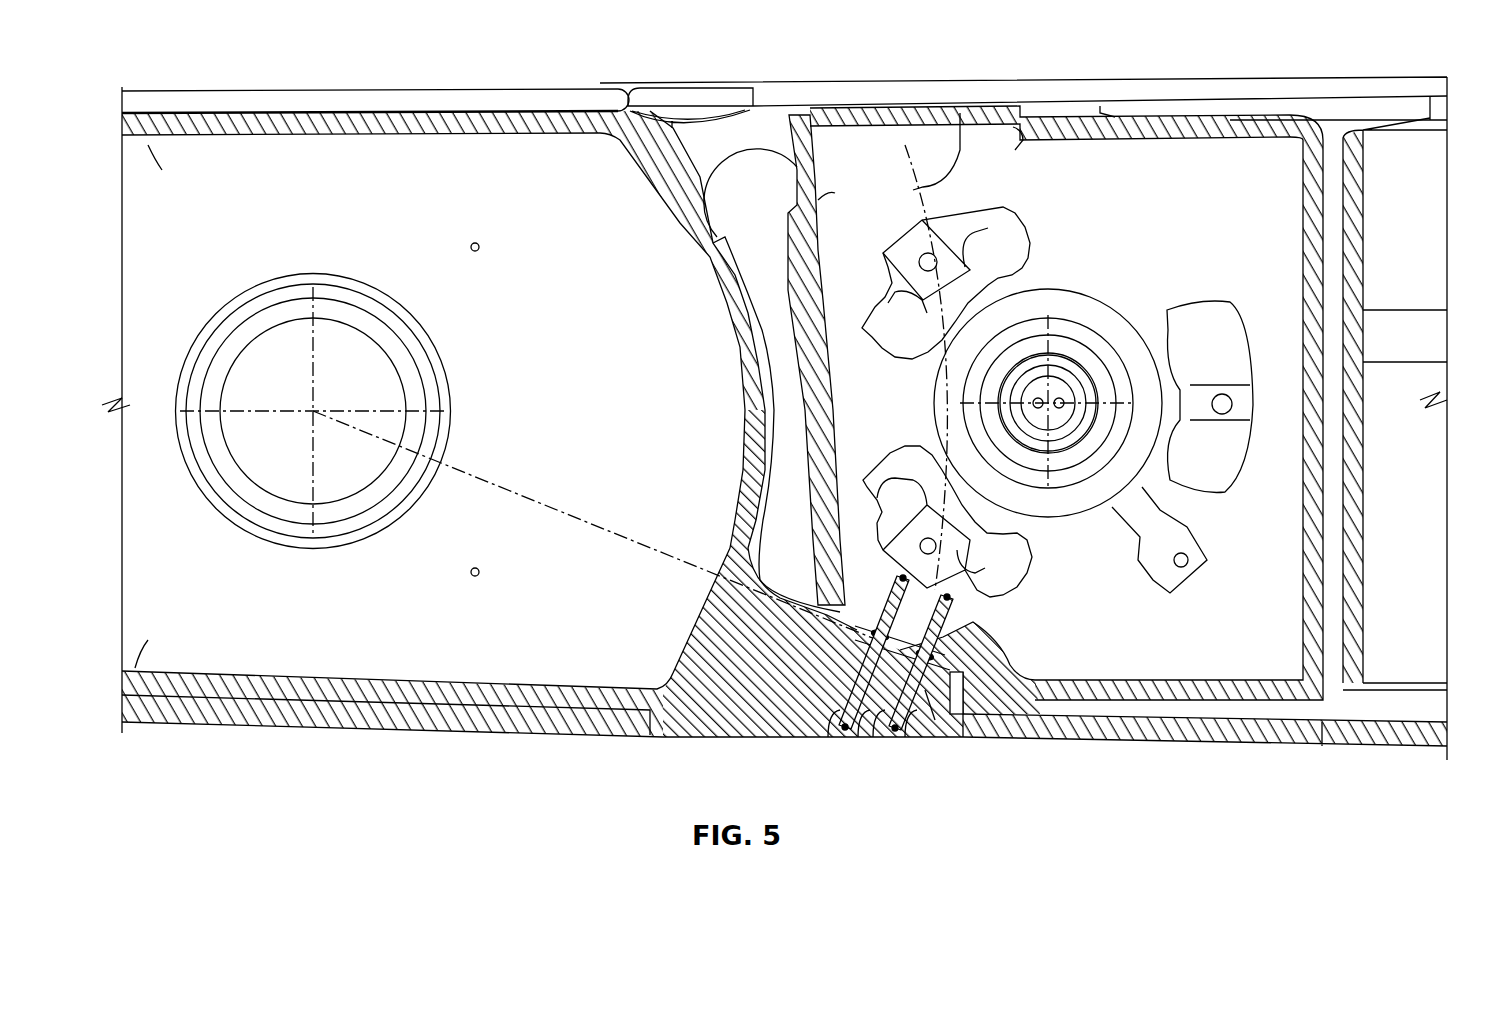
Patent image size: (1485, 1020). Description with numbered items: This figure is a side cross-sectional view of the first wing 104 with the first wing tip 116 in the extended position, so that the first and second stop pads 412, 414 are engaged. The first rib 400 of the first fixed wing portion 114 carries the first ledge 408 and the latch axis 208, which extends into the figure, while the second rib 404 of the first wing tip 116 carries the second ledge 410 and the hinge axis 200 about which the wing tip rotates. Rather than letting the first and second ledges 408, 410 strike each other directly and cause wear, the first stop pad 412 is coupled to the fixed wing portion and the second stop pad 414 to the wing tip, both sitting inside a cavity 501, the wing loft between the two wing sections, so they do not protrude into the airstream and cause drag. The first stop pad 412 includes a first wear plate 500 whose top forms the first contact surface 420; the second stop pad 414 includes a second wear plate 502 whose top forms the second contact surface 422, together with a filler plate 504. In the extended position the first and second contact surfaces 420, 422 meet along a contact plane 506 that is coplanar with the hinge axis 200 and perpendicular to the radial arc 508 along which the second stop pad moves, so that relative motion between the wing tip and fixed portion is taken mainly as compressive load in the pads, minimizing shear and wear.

The first wing 104 is at (256, 64).
The second rib 404 is at (393, 152).
The first wing tip 116 is at (480, 152).
The radial arc 508 is at (940, 185).
The first rib 400 is at (1118, 175).
The first fixed wing portion 114 is at (1205, 175).
The hinge axis 200 is at (313, 411).
The latch axis 208 is at (1048, 403).
The first ledge 408 is at (885, 585).
The contact plane 506 is at (603, 522).
The cavity 501 is at (755, 563).
The first contact surface 420 is at (852, 548).
The first wear plate 500 is at (963, 572).
The first stop pad 412 is at (947, 645).
The second contact surface 422 is at (872, 642).
The second wear plate 502 is at (872, 688).
The filler plate 504 is at (880, 715).
The second ledge 410 is at (733, 697).
The second stop pad 414 is at (927, 694).